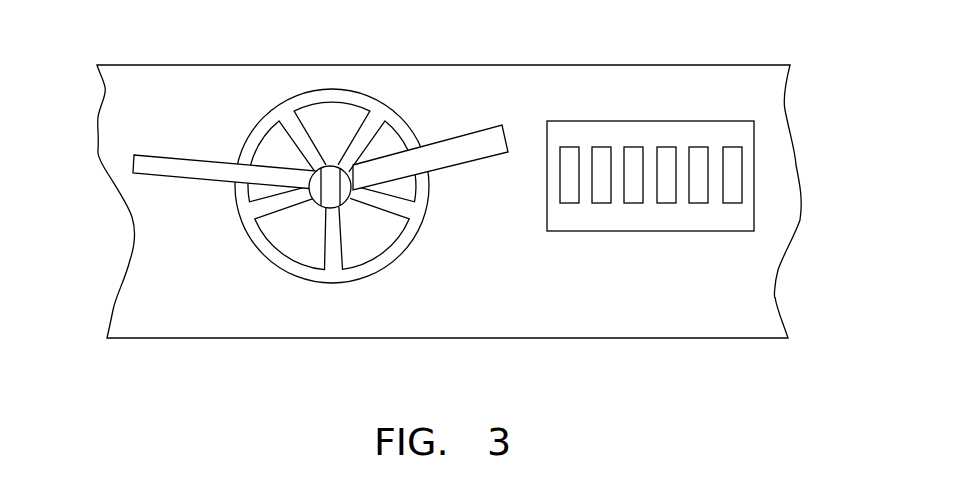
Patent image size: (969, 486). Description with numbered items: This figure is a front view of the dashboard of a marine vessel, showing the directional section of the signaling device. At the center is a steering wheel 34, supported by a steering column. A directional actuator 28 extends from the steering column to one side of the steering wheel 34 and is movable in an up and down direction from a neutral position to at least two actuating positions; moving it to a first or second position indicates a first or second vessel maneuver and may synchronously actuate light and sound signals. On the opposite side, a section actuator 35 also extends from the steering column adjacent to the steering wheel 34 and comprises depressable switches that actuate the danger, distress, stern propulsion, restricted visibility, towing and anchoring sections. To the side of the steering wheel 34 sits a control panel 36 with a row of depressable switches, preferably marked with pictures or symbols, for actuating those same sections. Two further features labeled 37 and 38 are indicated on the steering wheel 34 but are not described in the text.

The directional actuator 28 is at (175, 167).
The steering wheel 34 is at (330, 97).
The section actuator 35 is at (460, 138).
The control panel 36 is at (645, 132).
The wheel opening 37 is at (292, 252).
The wheel opening 38 is at (355, 238).